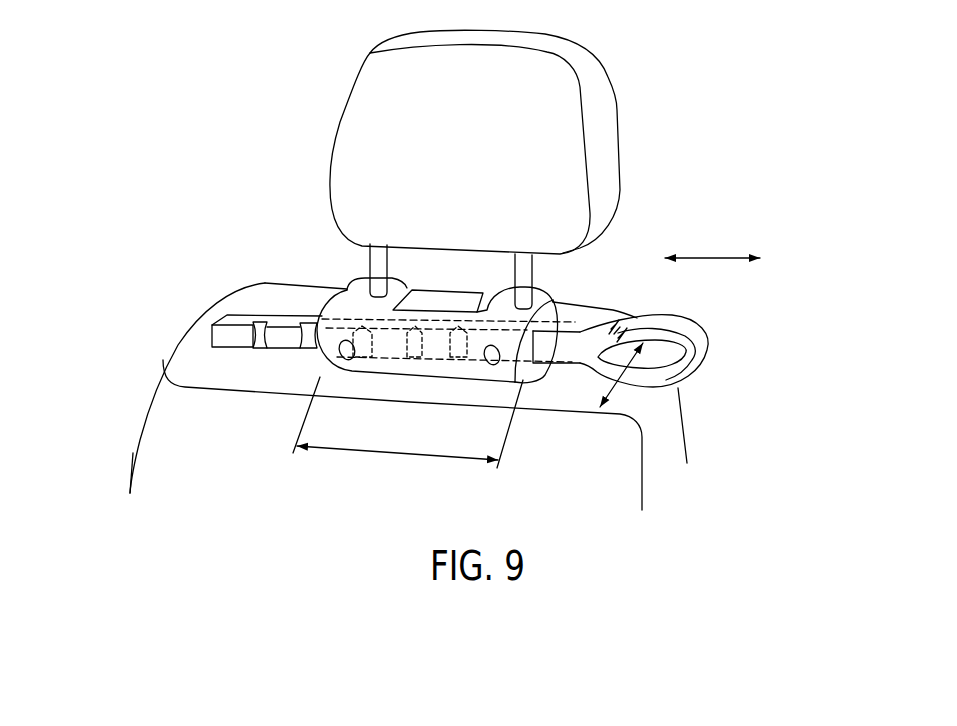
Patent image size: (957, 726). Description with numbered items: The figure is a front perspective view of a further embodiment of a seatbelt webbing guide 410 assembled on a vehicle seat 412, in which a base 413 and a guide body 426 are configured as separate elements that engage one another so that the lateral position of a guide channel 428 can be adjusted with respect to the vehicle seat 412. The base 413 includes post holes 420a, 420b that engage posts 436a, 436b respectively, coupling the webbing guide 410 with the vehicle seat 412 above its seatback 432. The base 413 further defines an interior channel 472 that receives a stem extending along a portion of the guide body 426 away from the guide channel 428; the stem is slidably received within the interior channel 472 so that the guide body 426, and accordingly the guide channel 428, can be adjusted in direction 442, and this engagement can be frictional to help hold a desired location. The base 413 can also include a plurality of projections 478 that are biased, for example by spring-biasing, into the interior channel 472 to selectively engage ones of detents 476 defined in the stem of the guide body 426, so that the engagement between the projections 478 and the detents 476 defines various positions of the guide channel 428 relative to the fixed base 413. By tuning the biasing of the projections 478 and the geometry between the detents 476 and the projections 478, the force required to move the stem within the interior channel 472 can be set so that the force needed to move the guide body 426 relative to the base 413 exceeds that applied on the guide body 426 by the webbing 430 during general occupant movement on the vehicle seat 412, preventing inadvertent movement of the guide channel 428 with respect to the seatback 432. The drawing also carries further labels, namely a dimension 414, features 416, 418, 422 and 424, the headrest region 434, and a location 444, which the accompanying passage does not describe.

The webbing guide 410 is at (735, 308).
The vehicle seat 412 is at (172, 320).
The base 413 is at (382, 367).
The width of housing 414 is at (417, 457).
The upper portion of seat back 416 is at (347, 296).
The end of housing 418 is at (566, 310).
The post hole 420a is at (490, 302).
The post hole 420b is at (348, 292).
The mount block 422 is at (400, 281).
The rod 424 is at (543, 377).
The guide body 426 is at (712, 374).
The guide channel 428 is at (670, 386).
The webbing 430 is at (612, 388).
The seatback 432 is at (158, 417).
The headrest 434 is at (557, 105).
The post 436a is at (527, 252).
The post 436b is at (384, 252).
The direction 442 is at (708, 253).
The attachment region 444 is at (628, 317).
The interior channel 472 is at (512, 378).
The detents 476 is at (305, 342).
The projections 478 is at (558, 352).